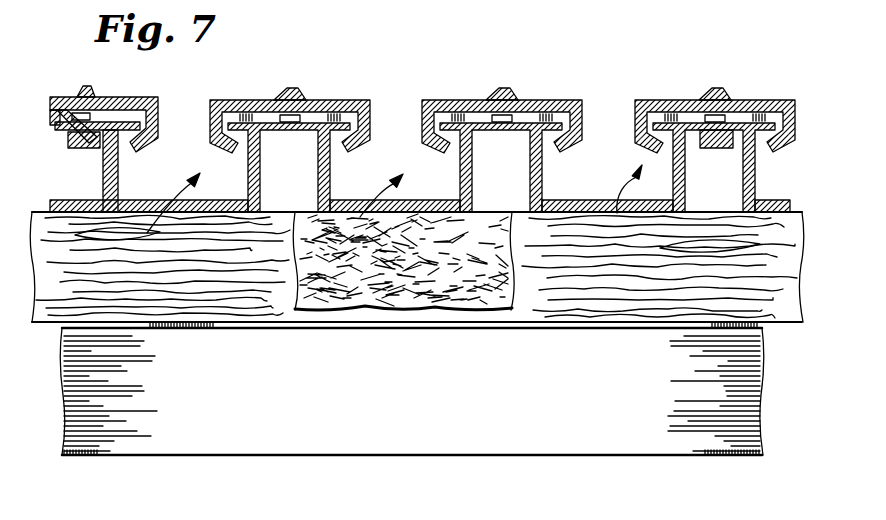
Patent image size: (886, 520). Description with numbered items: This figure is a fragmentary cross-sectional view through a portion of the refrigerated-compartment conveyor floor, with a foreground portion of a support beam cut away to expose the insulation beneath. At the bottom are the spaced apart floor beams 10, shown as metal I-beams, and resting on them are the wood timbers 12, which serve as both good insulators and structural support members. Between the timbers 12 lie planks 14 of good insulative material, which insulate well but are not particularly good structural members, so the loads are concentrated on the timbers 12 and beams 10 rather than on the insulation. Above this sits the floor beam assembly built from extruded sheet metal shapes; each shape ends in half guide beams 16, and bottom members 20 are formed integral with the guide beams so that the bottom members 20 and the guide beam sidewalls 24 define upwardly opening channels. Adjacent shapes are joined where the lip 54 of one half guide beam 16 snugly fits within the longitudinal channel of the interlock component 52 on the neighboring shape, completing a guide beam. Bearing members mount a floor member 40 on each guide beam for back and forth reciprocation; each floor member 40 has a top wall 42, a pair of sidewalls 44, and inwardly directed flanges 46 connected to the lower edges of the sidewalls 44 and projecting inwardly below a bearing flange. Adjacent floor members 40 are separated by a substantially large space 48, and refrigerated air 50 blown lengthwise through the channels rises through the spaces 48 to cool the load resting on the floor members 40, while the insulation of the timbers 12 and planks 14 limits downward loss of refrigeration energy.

The floor beam 10 is at (258, 423).
The wood timber 12 is at (238, 297).
The plank of insulative material 14 is at (383, 278).
The half guide beam 16 is at (717, 217).
The bottom member 20 is at (197, 212).
The sidewall 24 is at (314, 148).
The floor member 40 is at (64, 97).
The top wall 42 is at (110, 97).
The sidewall of floor member 44 is at (161, 110).
The inwardly directed flange 46 is at (148, 148).
The space 48 is at (190, 122).
The refrigerated air 50 is at (290, 240).
The interlock component 52 is at (88, 150).
The lip 54 is at (62, 149).